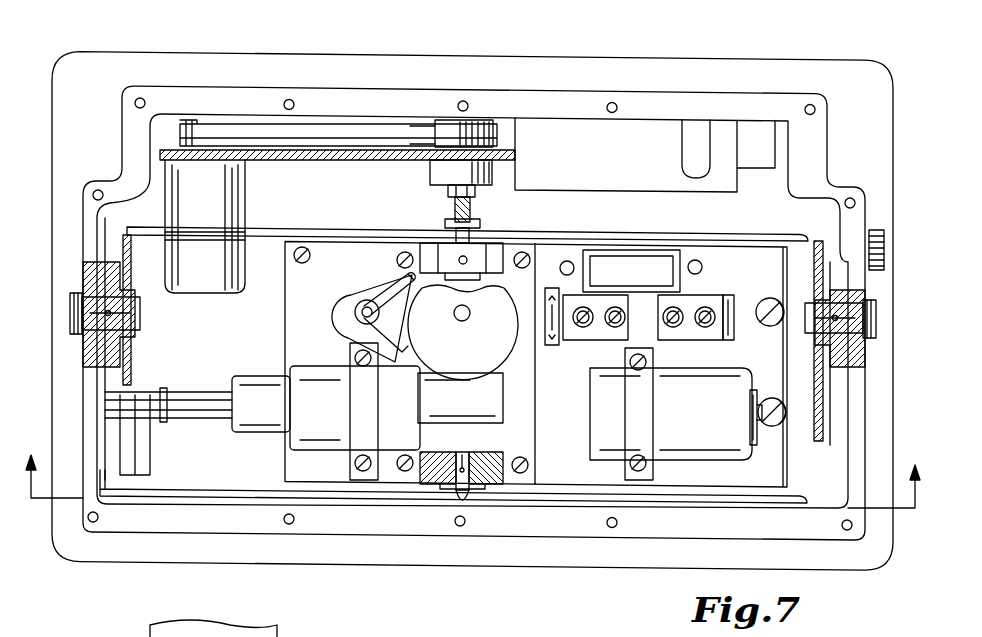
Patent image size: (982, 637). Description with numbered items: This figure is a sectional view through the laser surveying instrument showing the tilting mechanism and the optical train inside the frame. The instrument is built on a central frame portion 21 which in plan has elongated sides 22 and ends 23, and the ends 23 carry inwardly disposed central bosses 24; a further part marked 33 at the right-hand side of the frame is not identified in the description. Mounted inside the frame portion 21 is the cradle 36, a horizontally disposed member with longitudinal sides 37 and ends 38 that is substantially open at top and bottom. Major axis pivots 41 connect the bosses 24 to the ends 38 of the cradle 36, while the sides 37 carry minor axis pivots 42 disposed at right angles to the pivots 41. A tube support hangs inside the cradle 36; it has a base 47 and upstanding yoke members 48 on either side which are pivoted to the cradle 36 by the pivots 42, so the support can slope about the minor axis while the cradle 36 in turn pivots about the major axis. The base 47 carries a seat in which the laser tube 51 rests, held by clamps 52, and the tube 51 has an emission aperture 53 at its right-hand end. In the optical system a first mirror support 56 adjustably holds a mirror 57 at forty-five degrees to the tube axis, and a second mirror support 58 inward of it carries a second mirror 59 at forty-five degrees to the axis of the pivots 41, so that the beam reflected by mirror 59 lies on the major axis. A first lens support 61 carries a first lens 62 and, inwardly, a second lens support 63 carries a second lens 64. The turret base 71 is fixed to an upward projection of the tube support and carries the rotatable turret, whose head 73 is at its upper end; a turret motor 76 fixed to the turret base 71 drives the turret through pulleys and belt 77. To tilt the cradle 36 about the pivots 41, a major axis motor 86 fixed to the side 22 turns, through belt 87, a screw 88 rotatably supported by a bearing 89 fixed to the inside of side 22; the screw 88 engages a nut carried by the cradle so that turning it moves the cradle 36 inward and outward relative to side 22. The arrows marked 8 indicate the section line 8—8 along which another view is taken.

The section line 8- 8 is at (470, 481).
The central frame portion 21 is at (245, 569).
The elongated sides 22 is at (477, 553).
The ends 23 is at (60, 210).
The central bosses 24 is at (95, 343).
The outer case wall 33 is at (892, 184).
The cradle 36 is at (167, 497).
The longitudinal sides 37 is at (384, 231).
The ends 38 is at (103, 428).
The major axis pivots 41 is at (95, 312).
The minor axis pivots 42 is at (447, 226).
The base 47 is at (767, 366).
The upstanding yoke members 48 is at (490, 250).
The laser tube 51 is at (605, 442).
The clamps 52 is at (352, 415).
The emission aperture 53 is at (751, 405).
The first mirror support 56 is at (780, 425).
The mirror 57 is at (790, 410).
The second mirror support 58 is at (770, 297).
The second mirror 59 is at (763, 300).
The first lens support 61 is at (688, 340).
The first lens 62 is at (755, 302).
The second lens support 63 is at (568, 340).
The second lens 64 is at (550, 345).
The turret base 71 is at (530, 428).
The turret head 73 is at (505, 331).
The turret motor 76 is at (345, 290).
The pulleys and belt 77 is at (408, 285).
The major axis motor 86 is at (200, 290).
The belt 87 is at (405, 125).
The screw 88 is at (492, 243).
The bearing 89 is at (437, 176).